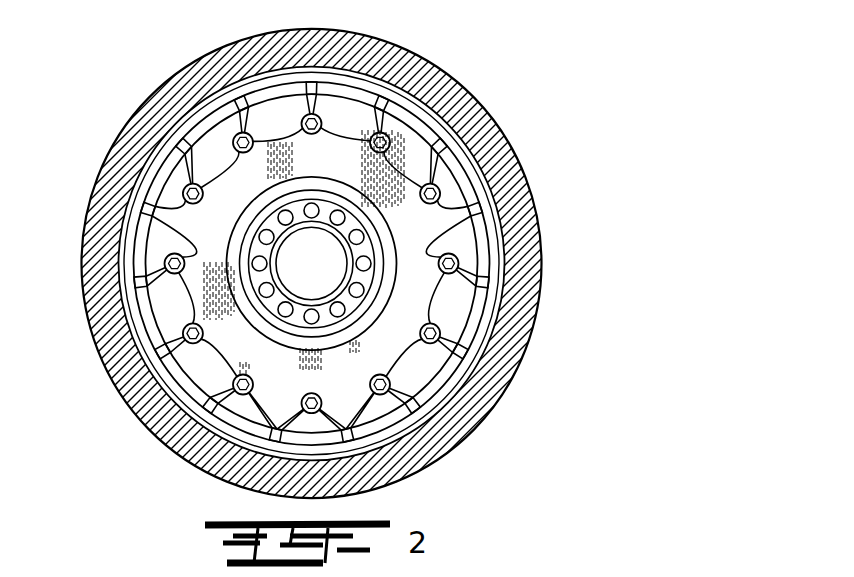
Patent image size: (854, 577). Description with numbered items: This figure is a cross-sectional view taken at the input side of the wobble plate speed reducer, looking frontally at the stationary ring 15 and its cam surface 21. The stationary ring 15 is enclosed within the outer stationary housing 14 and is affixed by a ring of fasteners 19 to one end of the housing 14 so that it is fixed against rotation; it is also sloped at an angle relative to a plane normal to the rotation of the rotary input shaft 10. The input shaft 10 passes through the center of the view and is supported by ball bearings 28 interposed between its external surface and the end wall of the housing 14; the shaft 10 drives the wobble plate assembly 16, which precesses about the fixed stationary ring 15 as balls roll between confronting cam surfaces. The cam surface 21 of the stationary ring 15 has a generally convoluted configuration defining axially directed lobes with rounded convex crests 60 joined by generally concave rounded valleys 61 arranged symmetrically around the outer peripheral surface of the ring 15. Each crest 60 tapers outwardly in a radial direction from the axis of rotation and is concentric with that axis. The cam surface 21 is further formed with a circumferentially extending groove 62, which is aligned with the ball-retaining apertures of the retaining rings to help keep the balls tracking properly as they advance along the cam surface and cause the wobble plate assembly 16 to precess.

The rotary input shaft 10 is at (313, 288).
The outer stationary housing 14 is at (89, 206).
The stationary ring 15 is at (198, 289).
The wobble plate assembly 16 is at (583, 549).
The fasteners 19 is at (439, 189).
The cam surface 21 is at (165, 163).
The ball bearings 28 is at (364, 236).
The crests 60 is at (385, 101).
The valleys 61 is at (414, 117).
The groove 62 is at (419, 132).